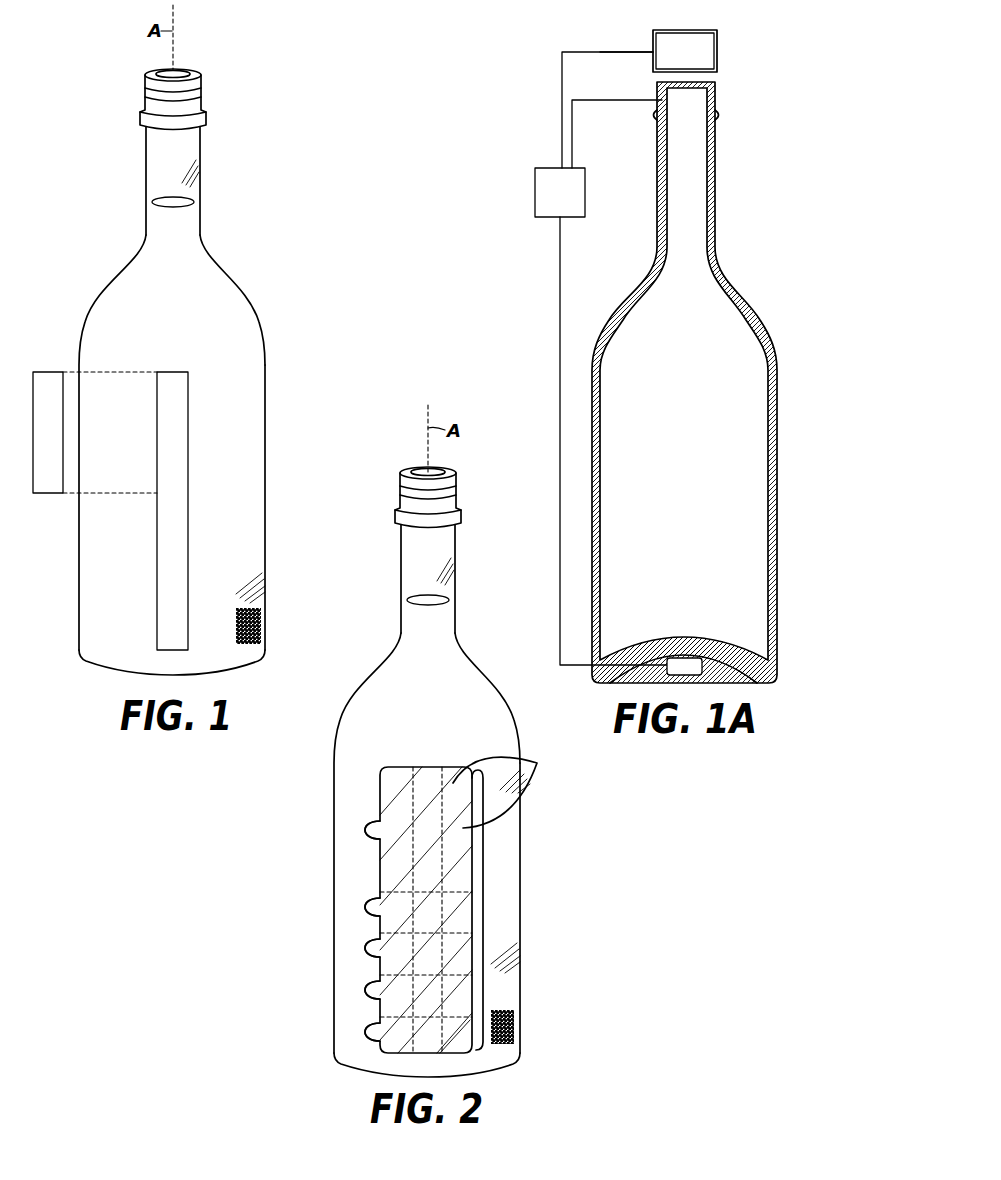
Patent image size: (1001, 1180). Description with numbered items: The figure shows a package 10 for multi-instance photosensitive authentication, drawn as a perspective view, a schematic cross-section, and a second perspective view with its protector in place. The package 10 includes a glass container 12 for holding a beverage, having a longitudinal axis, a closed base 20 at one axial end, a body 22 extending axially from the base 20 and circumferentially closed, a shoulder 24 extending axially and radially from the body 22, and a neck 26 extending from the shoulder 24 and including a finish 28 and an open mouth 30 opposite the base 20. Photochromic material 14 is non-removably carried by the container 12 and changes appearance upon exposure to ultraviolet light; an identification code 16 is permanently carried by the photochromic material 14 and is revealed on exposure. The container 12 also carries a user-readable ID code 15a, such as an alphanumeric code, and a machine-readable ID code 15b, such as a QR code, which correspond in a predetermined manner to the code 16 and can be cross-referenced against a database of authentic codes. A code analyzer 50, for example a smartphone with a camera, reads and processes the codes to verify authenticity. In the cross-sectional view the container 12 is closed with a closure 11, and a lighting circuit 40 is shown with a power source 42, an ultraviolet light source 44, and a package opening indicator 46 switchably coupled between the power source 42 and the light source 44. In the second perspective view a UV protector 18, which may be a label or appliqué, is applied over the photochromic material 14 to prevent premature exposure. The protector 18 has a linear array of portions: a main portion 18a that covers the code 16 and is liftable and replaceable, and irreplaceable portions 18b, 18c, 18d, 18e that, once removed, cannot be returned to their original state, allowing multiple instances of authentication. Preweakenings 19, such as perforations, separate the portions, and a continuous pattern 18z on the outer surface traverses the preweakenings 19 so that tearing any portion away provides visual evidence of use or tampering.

In FIG. 1, the package 10 is at (107, 152).
In FIG. 1A, the package 10 is at (753, 152).
In FIG. 2, the package 10 is at (388, 478).
In FIG. 1A, the closure 11 is at (748, 27).
In FIG. 1, the glass container 12 is at (92, 312).
In FIG. 2, the glass container 12 is at (344, 843).
In FIG. 1, the photochromic material 14 is at (190, 492).
In FIG. 2, the photochromic material 14 is at (447, 862).
In FIG. 1, the user-readable ID code 15a is at (235, 333).
In FIG. 2, the user-readable ID code 15a is at (451, 691).
In FIG. 1, the machine-readable ID code 15b is at (263, 618).
In FIG. 2, the machine-readable ID code 15b is at (528, 1051).
In FIG. 1, the identification code 16 is at (191, 437).
In FIG. 2, the UV protector 18 is at (483, 900).
In FIG. 2, the main portion 18a is at (372, 805).
In FIG. 2, the irreplaceable portion 18b is at (362, 908).
In FIG. 2, the irreplaceable portion 18c is at (362, 949).
In FIG. 2, the irreplaceable portion 18d is at (362, 989).
In FIG. 2, the irreplaceable portion 18e is at (362, 1030).
In FIG. 2, the continuous pattern 18z is at (533, 764).
In FIG. 2, the preweakenings 19 is at (395, 886).
In FIG. 1, the base 20 is at (105, 668).
In FIG. 1A, the base 20 is at (770, 688).
In FIG. 2, the base 20 is at (416, 1081).
In FIG. 1, the body 22 is at (266, 497).
In FIG. 2, the body 22 is at (532, 908).
In FIG. 1, the shoulder 24 is at (249, 297).
In FIG. 2, the shoulder 24 is at (496, 698).
In FIG. 1, the neck 26 is at (202, 143).
In FIG. 2, the neck 26 is at (452, 579).
In FIG. 1, the finish 28 is at (218, 91).
In FIG. 2, the finish 28 is at (460, 497).
In FIG. 1, the open mouth 30 is at (157, 72).
In FIG. 2, the open mouth 30 is at (450, 463).
In FIG. 1A, the lighting circuit 40 is at (533, 118).
In FIG. 1A, the power source 42 is at (571, 202).
In FIG. 1A, the ultraviolet light source 44 is at (680, 668).
In FIG. 1A, the package opening indicator 46 is at (595, 50).
In FIG. 1, the code analyzer 50 is at (46, 383).